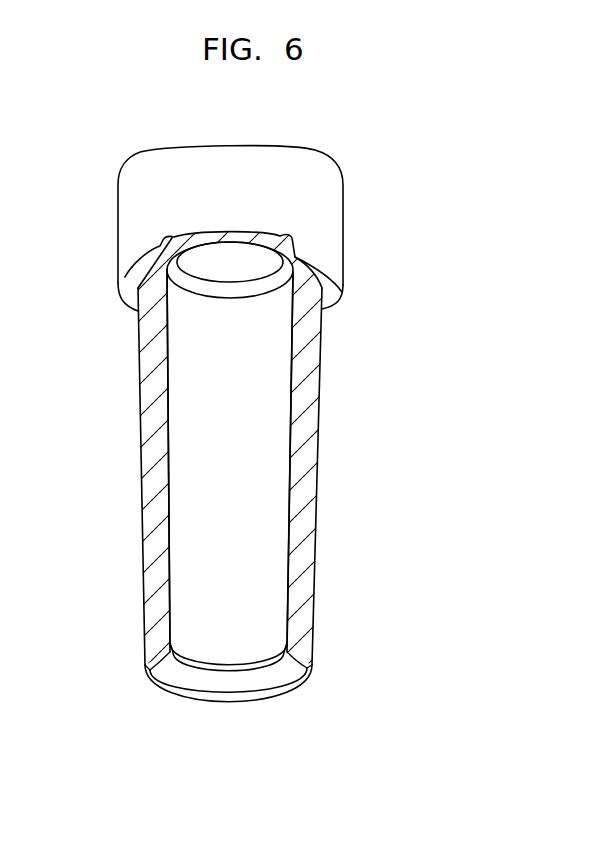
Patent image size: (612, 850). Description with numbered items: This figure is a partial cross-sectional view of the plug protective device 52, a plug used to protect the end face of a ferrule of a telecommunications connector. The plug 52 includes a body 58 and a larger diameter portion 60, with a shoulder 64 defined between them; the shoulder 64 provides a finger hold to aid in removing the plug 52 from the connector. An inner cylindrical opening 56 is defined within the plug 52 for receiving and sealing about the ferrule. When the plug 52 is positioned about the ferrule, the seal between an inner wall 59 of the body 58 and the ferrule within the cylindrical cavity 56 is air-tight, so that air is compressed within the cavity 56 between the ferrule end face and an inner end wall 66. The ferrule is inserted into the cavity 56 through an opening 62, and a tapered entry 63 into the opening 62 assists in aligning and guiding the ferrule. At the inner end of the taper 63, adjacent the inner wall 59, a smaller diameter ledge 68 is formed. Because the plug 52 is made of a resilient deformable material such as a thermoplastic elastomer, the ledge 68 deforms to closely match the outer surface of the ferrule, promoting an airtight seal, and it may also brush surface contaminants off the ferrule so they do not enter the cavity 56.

The plug protective device 52 is at (317, 513).
The inner cylindrical opening 56 is at (200, 483).
The body 58 is at (147, 397).
The inner wall 59 is at (241, 582).
The larger diameter portion 60 is at (132, 213).
The opening 62 is at (222, 645).
The tapered entry 63 is at (277, 678).
The shoulder 64 is at (330, 293).
The inner end wall 66 is at (238, 260).
The ledge 68 is at (265, 657).